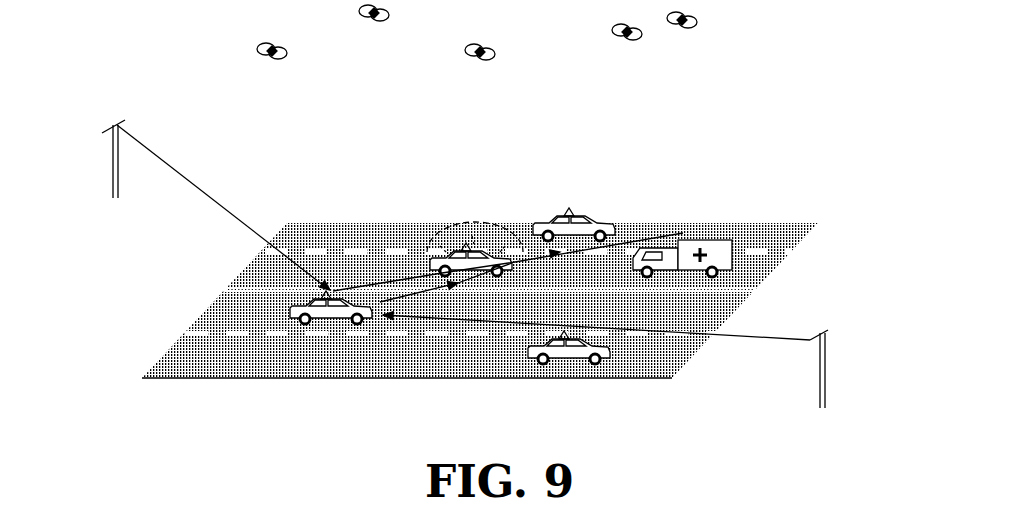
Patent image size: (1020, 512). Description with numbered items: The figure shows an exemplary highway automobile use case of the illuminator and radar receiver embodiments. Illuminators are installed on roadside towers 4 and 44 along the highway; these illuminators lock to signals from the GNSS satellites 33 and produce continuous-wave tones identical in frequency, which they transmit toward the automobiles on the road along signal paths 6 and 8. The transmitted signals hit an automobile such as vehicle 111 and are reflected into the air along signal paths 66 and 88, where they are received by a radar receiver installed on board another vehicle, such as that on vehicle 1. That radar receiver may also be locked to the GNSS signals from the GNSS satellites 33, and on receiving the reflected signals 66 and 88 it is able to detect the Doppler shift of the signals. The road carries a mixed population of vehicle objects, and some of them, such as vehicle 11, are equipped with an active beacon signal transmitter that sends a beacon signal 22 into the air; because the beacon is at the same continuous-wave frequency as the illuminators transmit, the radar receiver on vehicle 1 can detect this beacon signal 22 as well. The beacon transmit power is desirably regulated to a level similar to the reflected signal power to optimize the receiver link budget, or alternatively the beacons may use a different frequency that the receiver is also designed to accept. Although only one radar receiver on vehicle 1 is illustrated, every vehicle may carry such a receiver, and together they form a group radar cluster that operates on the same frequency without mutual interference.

The vehicle 1 is at (730, 257).
The roadside tower 4 is at (833, 328).
The signal path 6 is at (743, 334).
The signal path 8 is at (210, 197).
The vehicle 11 is at (432, 268).
The beacon signal 22 is at (462, 227).
The GNSS satellites 33 is at (675, 60).
The roadside tower 44 is at (100, 127).
The signal path 66 is at (515, 265).
The signal path 88 is at (390, 278).
The vehicle 111 is at (290, 312).